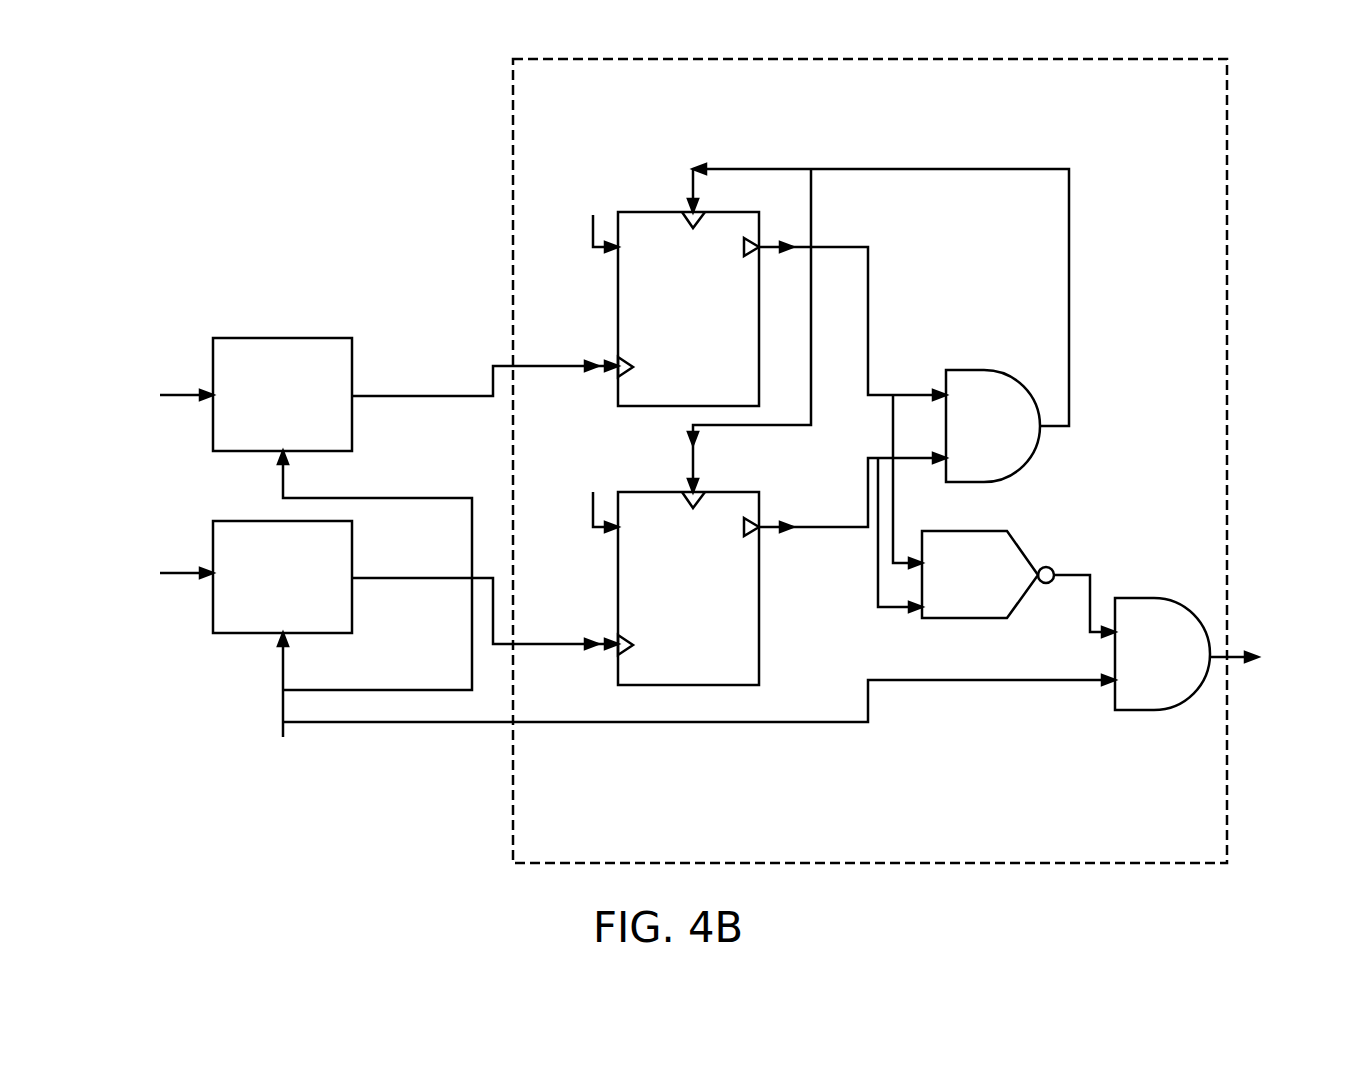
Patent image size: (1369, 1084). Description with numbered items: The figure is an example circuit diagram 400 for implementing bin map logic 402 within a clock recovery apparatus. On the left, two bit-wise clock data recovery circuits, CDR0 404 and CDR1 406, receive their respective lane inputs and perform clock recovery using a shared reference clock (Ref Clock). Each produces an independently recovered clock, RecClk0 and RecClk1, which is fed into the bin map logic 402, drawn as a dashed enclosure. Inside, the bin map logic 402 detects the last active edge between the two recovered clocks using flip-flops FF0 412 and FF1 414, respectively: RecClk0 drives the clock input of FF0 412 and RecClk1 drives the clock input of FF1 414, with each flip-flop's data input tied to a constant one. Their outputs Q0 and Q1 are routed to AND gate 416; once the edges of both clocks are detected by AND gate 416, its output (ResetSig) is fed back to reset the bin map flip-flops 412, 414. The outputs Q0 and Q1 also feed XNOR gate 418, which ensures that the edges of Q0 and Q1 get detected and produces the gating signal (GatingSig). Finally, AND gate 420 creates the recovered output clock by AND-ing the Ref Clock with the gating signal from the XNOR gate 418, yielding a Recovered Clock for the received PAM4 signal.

The circuit diagram 400 is at (260, 101).
The bin map logic 402 is at (795, 795).
The CDR0 404 is at (283, 338).
The CDR1 406 is at (210, 612).
The flip-flop FF0 412 is at (618, 300).
The flip-flop FF1 414 is at (759, 593).
The AND gate 416 is at (966, 370).
The XNOR gate 418 is at (1018, 538).
The AND gate 420 is at (1147, 710).